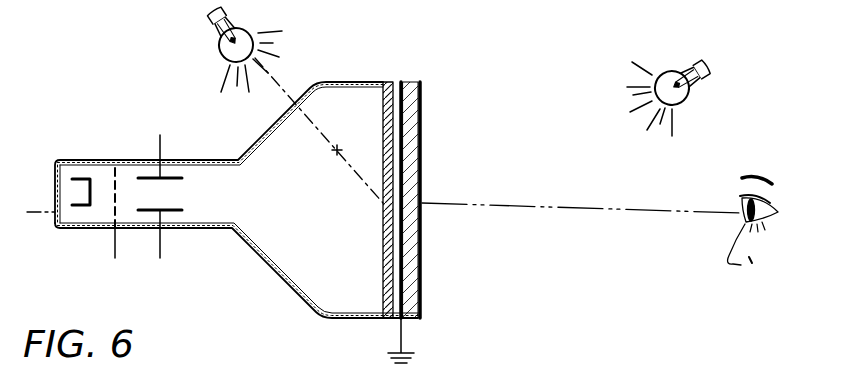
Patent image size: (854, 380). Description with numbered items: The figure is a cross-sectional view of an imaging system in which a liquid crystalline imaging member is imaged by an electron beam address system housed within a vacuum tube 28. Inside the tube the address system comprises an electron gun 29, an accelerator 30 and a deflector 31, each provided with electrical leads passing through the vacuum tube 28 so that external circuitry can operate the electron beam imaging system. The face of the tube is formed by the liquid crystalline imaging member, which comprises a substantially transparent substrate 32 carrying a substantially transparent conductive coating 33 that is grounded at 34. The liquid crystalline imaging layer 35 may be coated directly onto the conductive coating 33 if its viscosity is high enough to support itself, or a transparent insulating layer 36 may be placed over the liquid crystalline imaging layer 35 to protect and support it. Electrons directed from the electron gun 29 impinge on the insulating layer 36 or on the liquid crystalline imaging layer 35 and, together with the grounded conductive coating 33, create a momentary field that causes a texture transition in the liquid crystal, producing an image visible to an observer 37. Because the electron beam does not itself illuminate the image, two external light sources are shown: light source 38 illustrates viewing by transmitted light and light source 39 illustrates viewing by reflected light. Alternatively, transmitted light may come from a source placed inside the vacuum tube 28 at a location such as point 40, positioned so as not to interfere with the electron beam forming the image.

The vacuum tube 28 is at (281, 282).
The electron gun 29 is at (80, 207).
The accelerator 30 is at (110, 232).
The deflector 31 is at (164, 217).
The substantially transparent substrate 32 is at (422, 83).
The substantially transparent conductive coating 33 is at (410, 84).
The ground 34 is at (403, 338).
The liquid crystalline imaging layer 35 is at (400, 83).
The transparent insulating layer 36 is at (387, 83).
The observer 37 is at (774, 196).
The light source 38 is at (210, 29).
The light source 39 is at (691, 97).
The point 40 is at (340, 148).